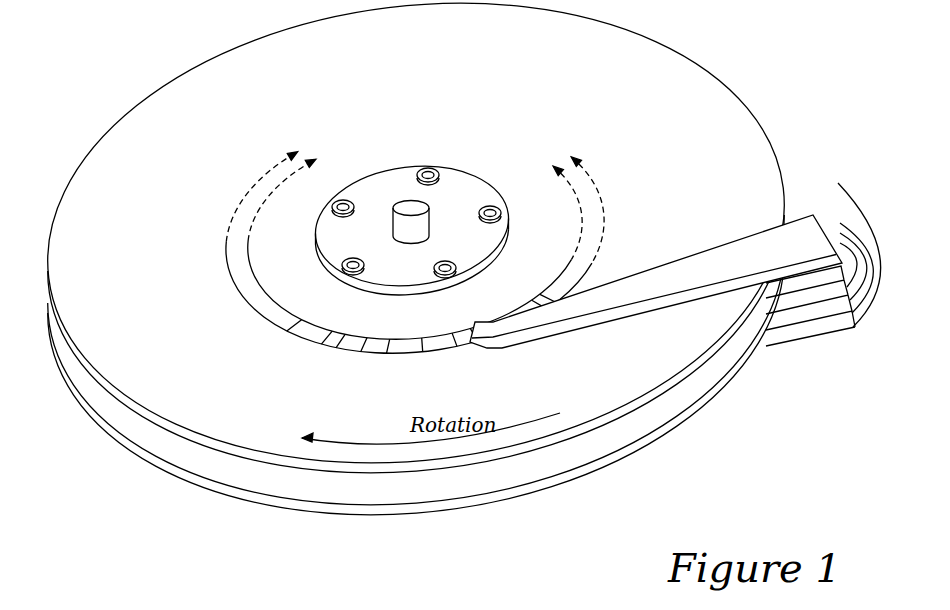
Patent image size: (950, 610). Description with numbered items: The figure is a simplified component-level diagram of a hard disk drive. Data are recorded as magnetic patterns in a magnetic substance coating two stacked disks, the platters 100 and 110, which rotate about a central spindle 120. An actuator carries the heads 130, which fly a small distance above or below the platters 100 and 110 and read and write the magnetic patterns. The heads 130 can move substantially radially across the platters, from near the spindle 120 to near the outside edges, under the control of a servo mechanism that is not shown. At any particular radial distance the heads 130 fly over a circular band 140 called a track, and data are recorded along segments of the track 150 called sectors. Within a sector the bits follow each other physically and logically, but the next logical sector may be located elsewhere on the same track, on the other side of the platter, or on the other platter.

The platter 100 is at (150, 387).
The platter 110 is at (180, 457).
The spindle 120 is at (407, 207).
The heads 130 is at (824, 236).
The circular band (track) 140 is at (237, 238).
The segments of the track (sectors) 150 is at (377, 351).